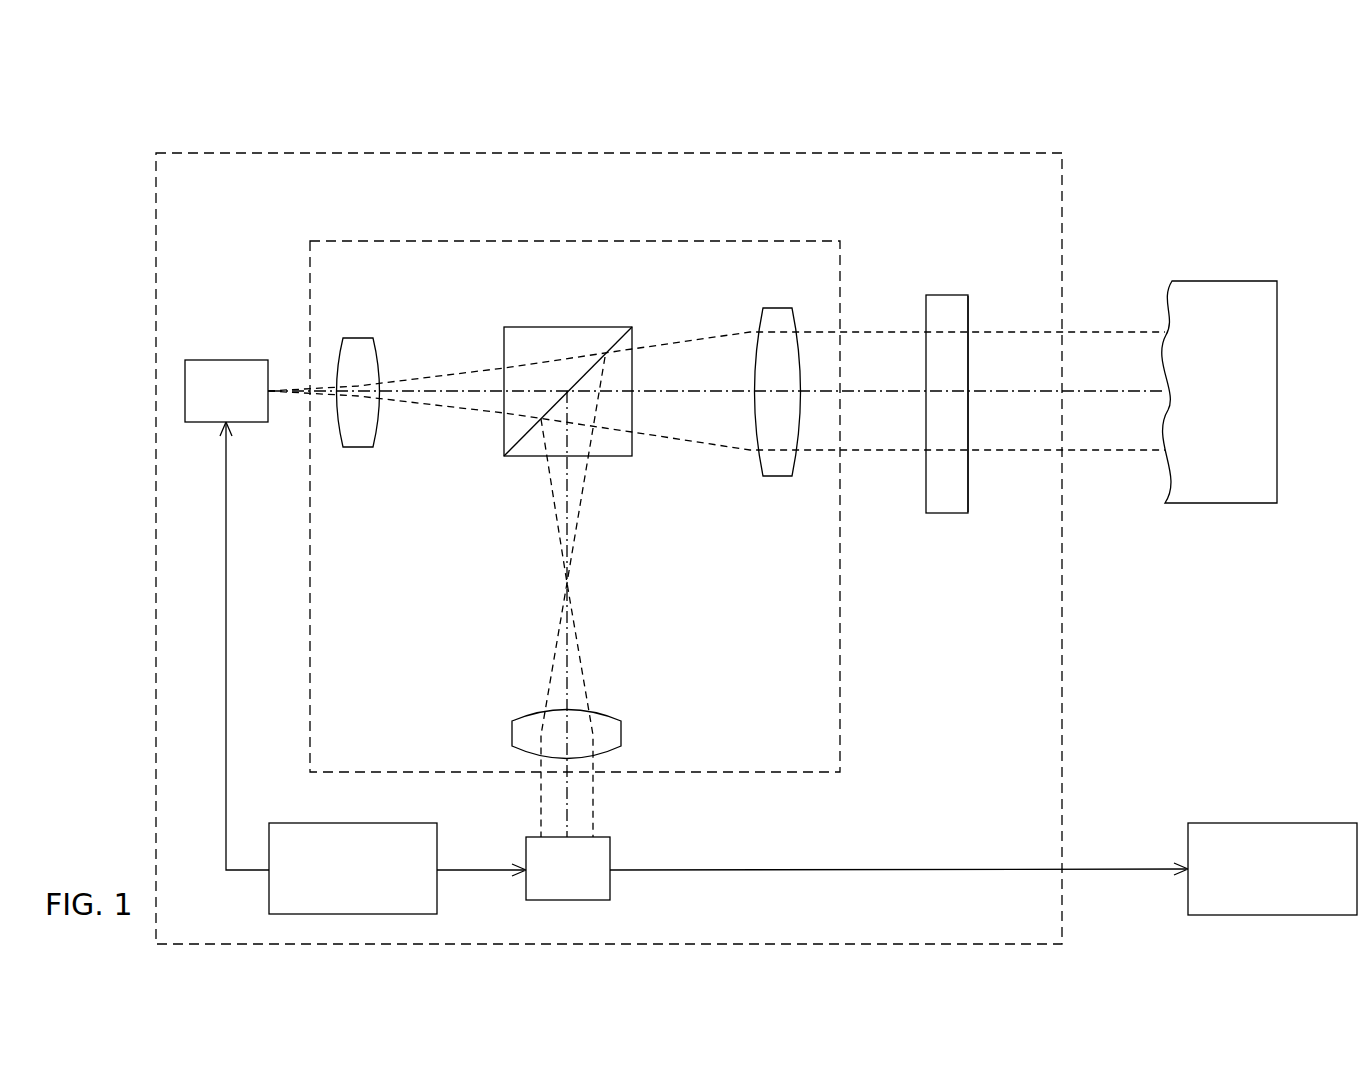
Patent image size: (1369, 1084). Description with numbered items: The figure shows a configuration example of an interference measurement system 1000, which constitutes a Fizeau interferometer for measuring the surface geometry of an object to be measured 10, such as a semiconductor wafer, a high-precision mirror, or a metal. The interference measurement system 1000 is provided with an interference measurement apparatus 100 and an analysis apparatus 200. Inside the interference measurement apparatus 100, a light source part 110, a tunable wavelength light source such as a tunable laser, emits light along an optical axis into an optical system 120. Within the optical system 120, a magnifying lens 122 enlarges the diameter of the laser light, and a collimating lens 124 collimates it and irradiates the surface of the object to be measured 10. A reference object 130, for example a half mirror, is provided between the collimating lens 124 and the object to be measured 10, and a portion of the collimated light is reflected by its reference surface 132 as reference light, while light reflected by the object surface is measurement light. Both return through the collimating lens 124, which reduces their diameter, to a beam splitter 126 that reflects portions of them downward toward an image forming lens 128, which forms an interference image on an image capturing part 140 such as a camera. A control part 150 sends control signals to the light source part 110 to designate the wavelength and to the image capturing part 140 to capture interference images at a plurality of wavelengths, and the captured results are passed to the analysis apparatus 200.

The interference measurement system 1000 is at (1148, 106).
The interference measurement apparatus 100 is at (238, 153).
The object to be measured 10 is at (1258, 281).
The light source part 110 is at (216, 360).
The optical system 120 is at (397, 241).
The magnifying lens 122 is at (368, 338).
The collimating lens 124 is at (781, 308).
The beam splitter 126 is at (532, 327).
The image forming lens 128 is at (618, 720).
The reference object 130 is at (953, 295).
The reference surface 132 is at (969, 318).
The image capturing part 140 is at (612, 837).
The control part 150 is at (297, 823).
The analysis apparatus 200 is at (1225, 823).